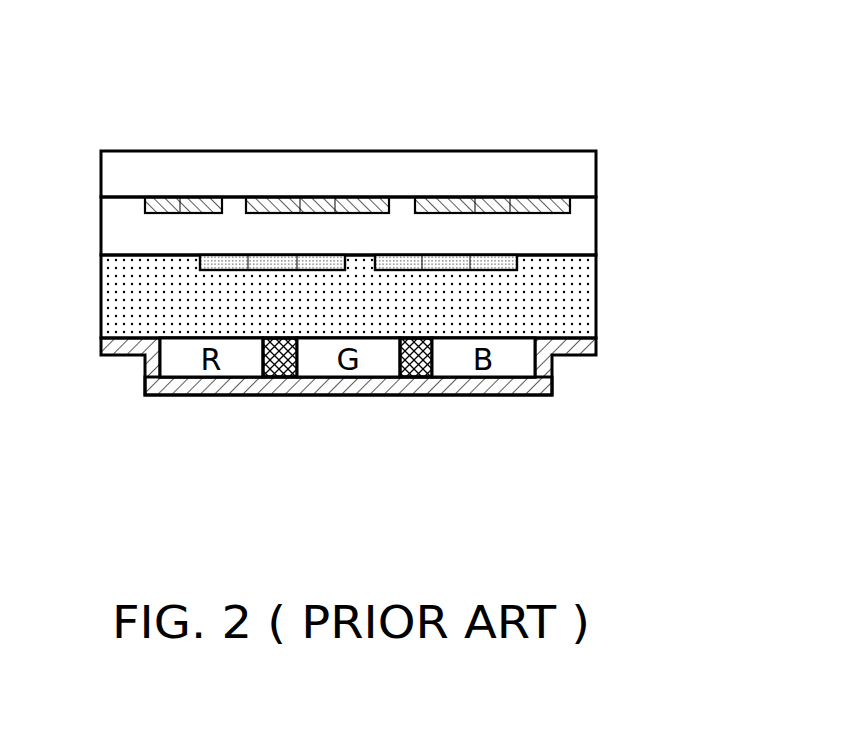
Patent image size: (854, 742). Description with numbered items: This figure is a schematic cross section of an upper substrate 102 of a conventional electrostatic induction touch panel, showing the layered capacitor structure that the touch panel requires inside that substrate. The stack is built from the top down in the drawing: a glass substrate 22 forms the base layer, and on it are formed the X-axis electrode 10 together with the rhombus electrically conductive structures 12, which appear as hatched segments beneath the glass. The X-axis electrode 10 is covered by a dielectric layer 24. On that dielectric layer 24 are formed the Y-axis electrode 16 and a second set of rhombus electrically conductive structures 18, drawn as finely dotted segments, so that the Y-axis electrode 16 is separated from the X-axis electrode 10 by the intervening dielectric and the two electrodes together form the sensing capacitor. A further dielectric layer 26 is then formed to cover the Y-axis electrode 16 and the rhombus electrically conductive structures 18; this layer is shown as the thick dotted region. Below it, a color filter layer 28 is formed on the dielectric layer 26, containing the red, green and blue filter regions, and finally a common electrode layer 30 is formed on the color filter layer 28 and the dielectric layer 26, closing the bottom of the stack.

The upper substrate 102 is at (631, 86).
The X-axis electrode 10 is at (163, 200).
The rhombus electrically conductive structures 12 is at (200, 200).
The Y-axis electrode 16 is at (276, 270).
The rhombus electrically conductive structures 18 is at (226, 270).
The glass substrate 22 is at (588, 173).
The dielectric layer 24 is at (588, 226).
The dielectric layer 26 is at (588, 296).
The color filter layer 28 is at (157, 369).
The common electrode layer 30 is at (530, 396).